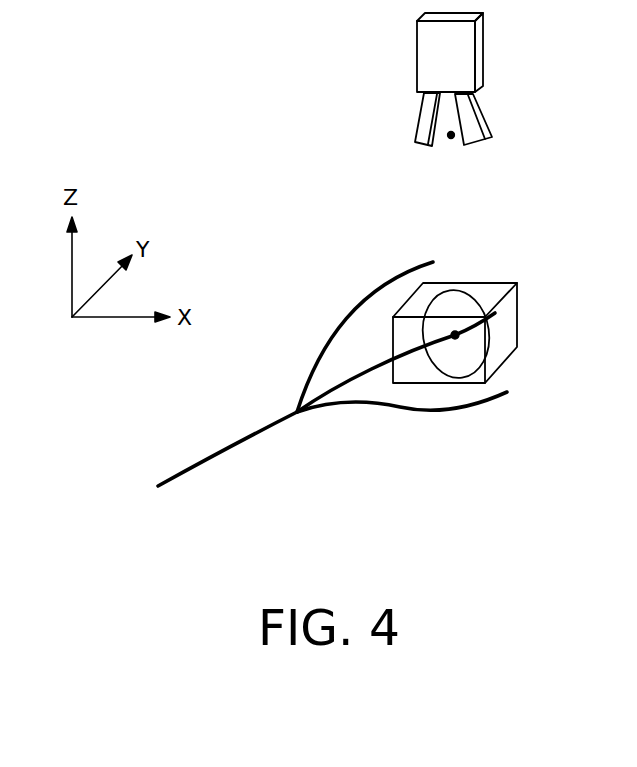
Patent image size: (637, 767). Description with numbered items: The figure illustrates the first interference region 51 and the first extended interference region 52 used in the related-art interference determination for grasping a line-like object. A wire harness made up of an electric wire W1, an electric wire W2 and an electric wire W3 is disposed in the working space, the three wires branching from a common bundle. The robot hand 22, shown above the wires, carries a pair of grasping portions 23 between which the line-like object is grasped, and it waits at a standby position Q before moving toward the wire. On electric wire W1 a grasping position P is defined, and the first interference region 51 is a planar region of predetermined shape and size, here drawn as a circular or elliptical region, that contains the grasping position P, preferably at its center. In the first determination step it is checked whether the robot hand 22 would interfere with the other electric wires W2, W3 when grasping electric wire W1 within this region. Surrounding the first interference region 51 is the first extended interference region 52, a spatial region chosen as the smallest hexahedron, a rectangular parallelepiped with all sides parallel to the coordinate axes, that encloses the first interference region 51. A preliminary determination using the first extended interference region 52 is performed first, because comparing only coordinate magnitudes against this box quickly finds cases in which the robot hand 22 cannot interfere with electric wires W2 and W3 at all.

The robot hand 22 is at (467, 60).
The grasping portions 23 is at (430, 110).
The standby position Q is at (454, 140).
The first interference region 51 is at (451, 294).
The first extended interference region 52 is at (505, 328).
The grasping position P is at (457, 332).
The electric wire W1 is at (340, 377).
The electric wire W2 is at (360, 308).
The electric wire W3 is at (363, 402).